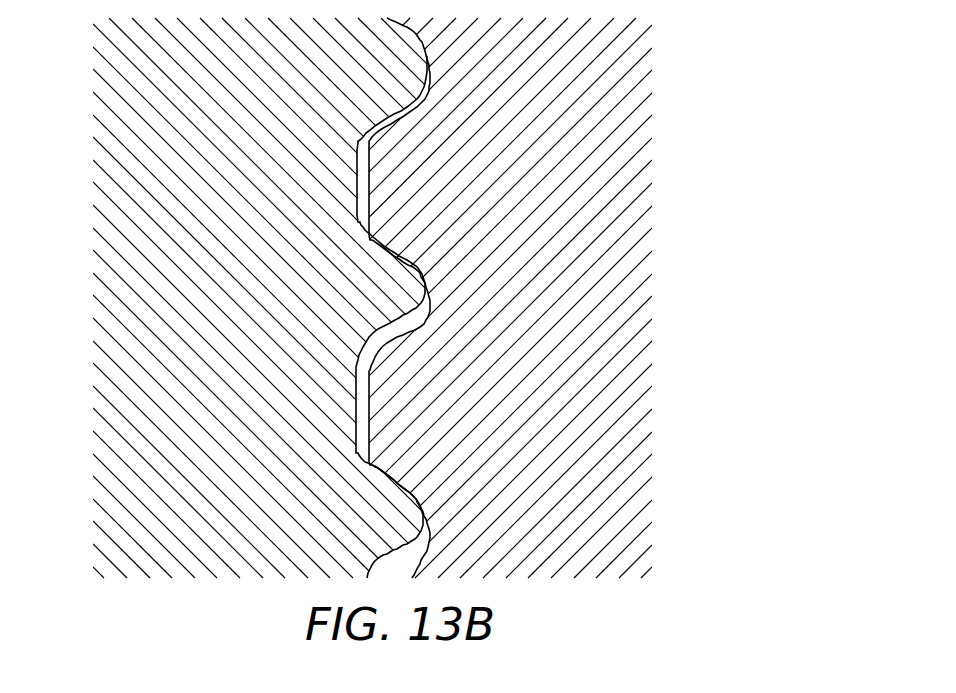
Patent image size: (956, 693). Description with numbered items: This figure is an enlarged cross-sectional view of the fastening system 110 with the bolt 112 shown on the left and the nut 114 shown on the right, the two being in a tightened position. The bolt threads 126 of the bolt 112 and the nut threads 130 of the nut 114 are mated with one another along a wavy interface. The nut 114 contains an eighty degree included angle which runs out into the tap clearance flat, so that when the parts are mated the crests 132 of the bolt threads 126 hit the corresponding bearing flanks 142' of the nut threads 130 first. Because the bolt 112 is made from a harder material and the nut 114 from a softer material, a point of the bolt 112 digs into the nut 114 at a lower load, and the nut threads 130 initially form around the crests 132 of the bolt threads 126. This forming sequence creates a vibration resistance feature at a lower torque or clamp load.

The fastening system 110 is at (399, 322).
The bolt 112 is at (122, 523).
The nut 114 is at (583, 442).
The bolt threads 126 is at (334, 519).
The nut threads 130 is at (401, 465).
The crests 132 is at (423, 282).
The bearing flanks 142' is at (551, 239).